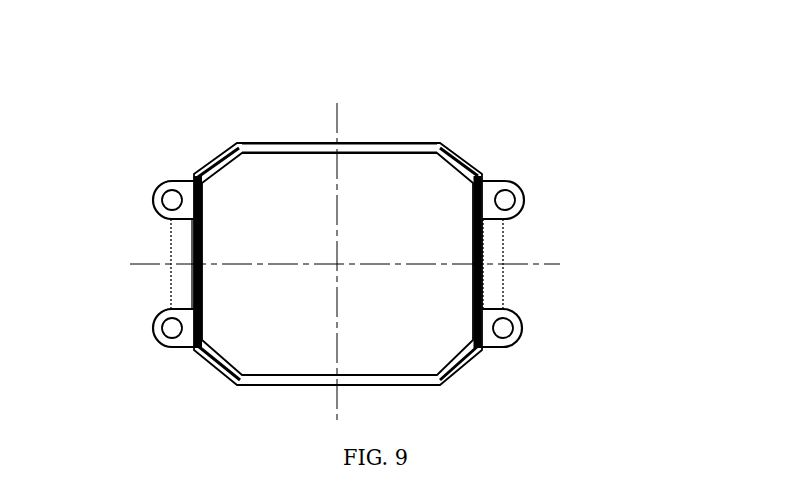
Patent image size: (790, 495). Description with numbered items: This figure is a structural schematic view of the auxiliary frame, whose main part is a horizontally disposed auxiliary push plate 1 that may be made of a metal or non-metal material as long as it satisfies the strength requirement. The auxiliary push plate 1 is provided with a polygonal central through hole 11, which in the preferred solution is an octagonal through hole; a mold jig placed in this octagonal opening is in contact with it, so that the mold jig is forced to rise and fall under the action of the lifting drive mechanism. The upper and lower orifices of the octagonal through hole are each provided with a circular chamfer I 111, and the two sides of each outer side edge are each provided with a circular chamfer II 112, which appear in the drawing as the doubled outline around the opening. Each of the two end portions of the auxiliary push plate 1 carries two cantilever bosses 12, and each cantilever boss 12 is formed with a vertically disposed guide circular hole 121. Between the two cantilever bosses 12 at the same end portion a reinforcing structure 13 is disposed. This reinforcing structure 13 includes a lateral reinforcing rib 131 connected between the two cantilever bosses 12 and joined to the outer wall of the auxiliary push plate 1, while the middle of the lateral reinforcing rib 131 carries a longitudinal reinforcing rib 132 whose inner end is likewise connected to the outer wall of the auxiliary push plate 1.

The auxiliary push plate 1 is at (420, 148).
The polygonal central through hole 11 is at (283, 177).
The circular chamfer I 111 is at (458, 157).
The circular chamfer II 112 is at (448, 152).
The cantilever boss 12 is at (485, 215).
The guide circular hole 121 is at (505, 200).
The reinforcing structure 13 is at (170, 262).
The lateral reinforcing rib 131 is at (488, 287).
The longitudinal reinforcing rib 132 is at (483, 265).